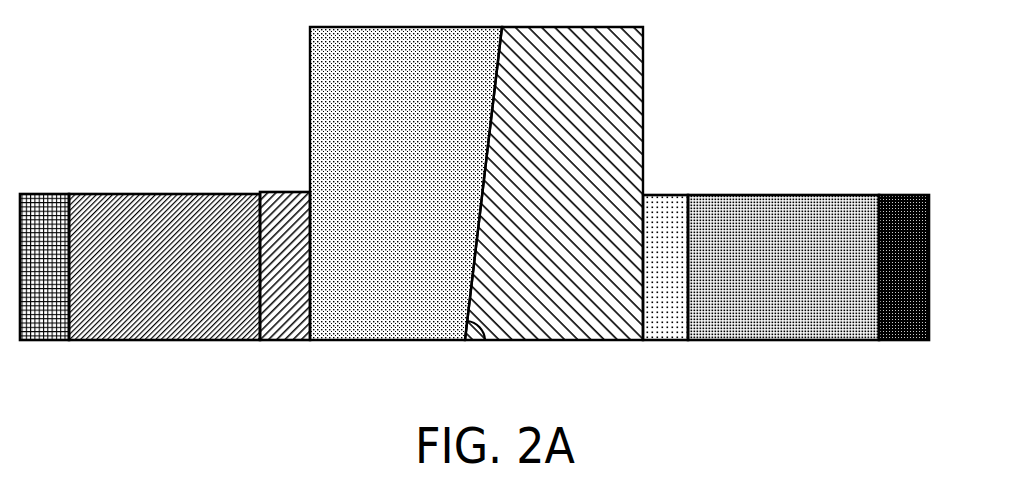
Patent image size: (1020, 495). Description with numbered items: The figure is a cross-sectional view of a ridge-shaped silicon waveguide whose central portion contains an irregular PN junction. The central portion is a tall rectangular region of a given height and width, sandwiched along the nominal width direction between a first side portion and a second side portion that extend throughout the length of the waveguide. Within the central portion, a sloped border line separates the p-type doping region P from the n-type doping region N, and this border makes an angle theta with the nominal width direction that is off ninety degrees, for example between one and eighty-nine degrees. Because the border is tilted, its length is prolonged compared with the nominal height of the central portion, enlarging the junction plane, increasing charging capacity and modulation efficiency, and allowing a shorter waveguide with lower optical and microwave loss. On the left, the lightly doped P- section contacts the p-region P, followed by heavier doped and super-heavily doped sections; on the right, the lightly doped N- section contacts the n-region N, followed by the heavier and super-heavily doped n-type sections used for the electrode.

The P− section P- is at (285, 286).
The p-type doping region P is at (406, 183).
The n-type doping region N is at (554, 183).
The angle θ theta is at (499, 311).
The N− section N- is at (665, 287).